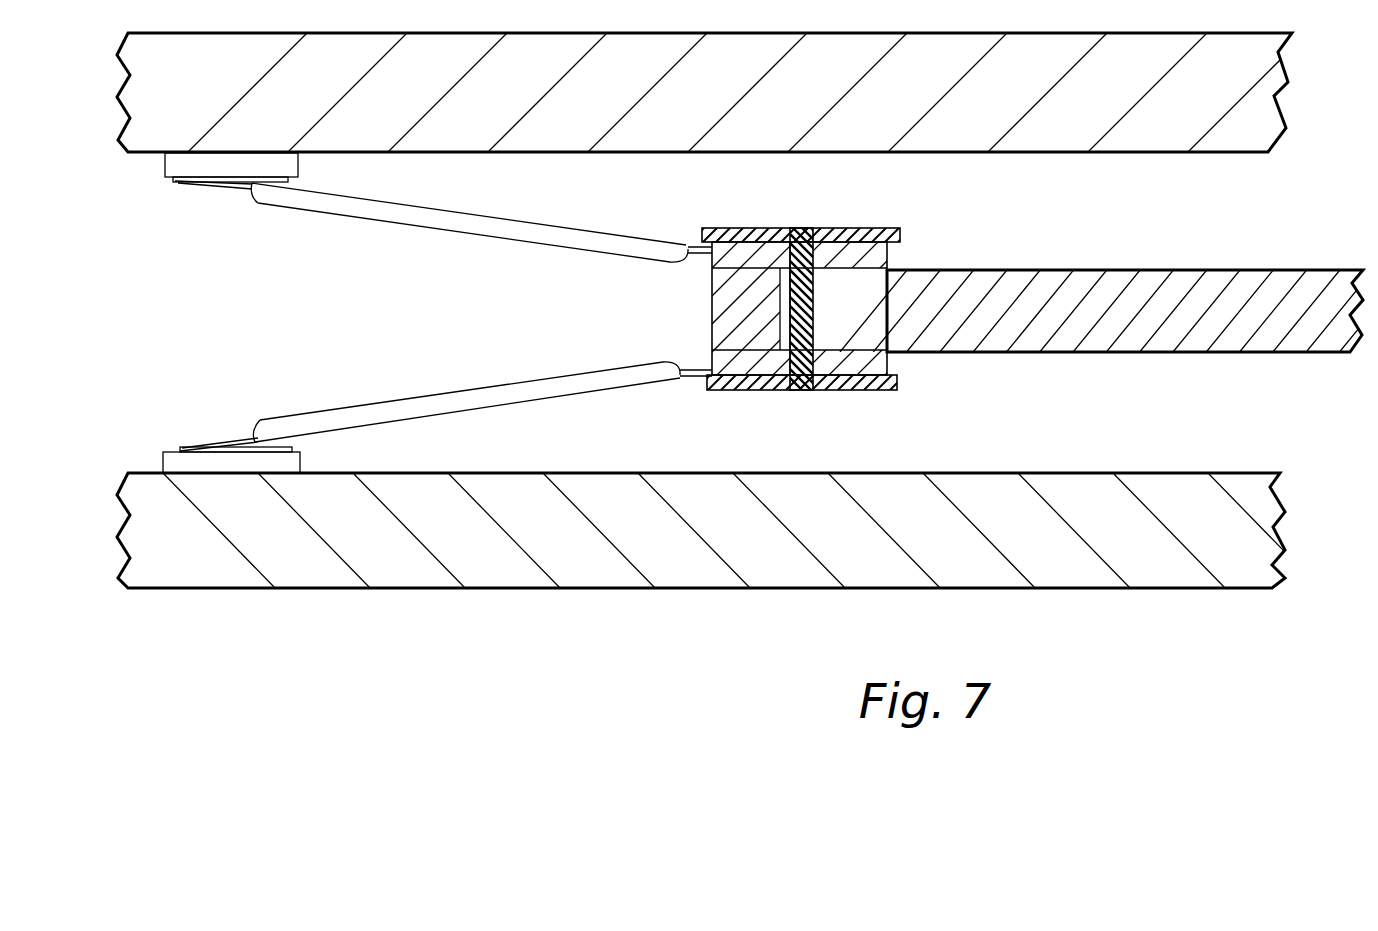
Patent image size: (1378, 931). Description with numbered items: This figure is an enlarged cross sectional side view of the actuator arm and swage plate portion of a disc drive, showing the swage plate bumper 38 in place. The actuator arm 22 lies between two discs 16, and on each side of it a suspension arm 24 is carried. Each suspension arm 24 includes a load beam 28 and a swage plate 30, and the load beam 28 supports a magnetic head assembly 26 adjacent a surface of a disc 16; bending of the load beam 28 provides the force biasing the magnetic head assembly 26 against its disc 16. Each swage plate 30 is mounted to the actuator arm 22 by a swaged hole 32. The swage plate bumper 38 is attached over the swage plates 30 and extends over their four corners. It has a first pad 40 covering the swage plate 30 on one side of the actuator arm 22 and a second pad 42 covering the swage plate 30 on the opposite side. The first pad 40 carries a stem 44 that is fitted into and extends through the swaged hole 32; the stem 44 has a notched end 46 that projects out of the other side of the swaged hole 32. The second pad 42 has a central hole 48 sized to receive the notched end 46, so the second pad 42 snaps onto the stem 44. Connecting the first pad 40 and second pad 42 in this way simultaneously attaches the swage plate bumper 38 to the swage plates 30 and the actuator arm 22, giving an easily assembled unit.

The disc 16 is at (745, 44).
The actuator arm 22 is at (1262, 276).
The suspension arm 24 is at (459, 230).
The magnetic head assembly 26 is at (217, 166).
The load beam 28 is at (523, 228).
The swage plate 30 is at (873, 257).
The swaged hole 32 is at (758, 239).
The swage plate bumper 38 is at (810, 299).
The first pad 40 is at (838, 393).
The second pad 42 is at (882, 232).
The stem 44 is at (787, 307).
The notched end 46 is at (808, 232).
The central hole 48 is at (832, 235).